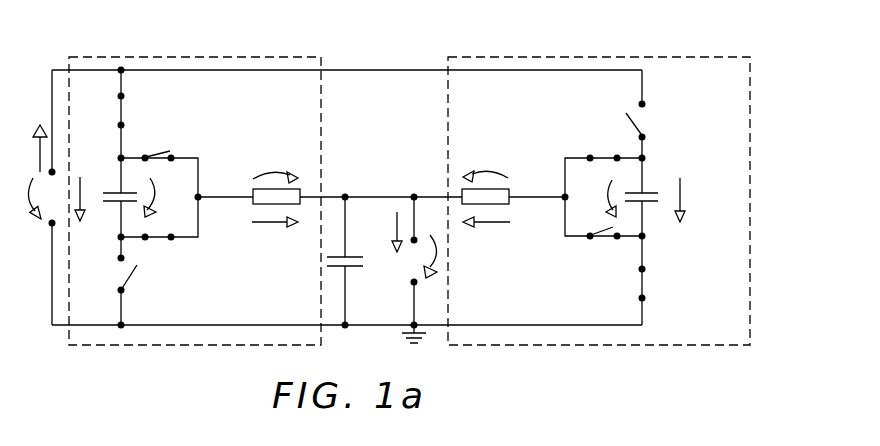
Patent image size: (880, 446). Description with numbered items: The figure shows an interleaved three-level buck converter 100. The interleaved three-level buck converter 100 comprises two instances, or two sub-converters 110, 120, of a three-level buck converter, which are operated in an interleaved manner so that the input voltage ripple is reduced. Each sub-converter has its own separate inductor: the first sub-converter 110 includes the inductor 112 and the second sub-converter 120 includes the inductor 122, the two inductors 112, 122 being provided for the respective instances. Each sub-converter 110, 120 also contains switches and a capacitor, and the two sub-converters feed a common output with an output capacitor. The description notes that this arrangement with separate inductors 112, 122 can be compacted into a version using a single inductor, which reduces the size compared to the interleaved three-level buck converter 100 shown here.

The interleaved 3-level buck converter 100 is at (128, 48).
The sub-converter 110 is at (321, 144).
The inductor 112 is at (252, 204).
The sub-converter 120 is at (449, 97).
The inductor 122 is at (510, 203).